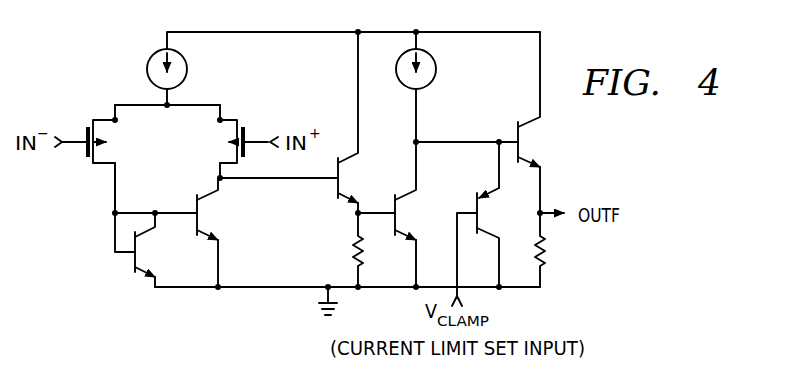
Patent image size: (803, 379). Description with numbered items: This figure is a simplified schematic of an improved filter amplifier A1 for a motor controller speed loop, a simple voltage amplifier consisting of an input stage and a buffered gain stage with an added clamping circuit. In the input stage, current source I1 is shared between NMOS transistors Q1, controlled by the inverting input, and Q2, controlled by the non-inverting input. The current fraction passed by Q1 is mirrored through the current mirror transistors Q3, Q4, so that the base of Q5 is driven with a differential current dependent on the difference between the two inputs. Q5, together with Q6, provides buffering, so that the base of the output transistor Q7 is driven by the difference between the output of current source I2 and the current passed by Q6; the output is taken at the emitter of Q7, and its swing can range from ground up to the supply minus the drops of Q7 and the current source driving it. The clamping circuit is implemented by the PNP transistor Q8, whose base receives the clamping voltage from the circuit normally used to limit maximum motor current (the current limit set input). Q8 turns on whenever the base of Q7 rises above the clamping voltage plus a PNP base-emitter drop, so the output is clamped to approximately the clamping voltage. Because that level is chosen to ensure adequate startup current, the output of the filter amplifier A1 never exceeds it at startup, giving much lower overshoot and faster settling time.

The NMOS transistor Q1 is at (116, 141).
The NMOS transistor Q2 is at (217, 141).
The current mirror transistor Q3 is at (157, 250).
The current mirror transistor Q4 is at (219, 232).
The buffer transistor Q5 is at (360, 122).
The buffer transistor Q6 is at (417, 214).
The output transistor Q7 is at (540, 99).
The clamping transistor Q8 is at (499, 214).
The current source I1 is at (178, 69).
The current source I2 is at (427, 69).
The filter amplifier A1 is at (66, 244).